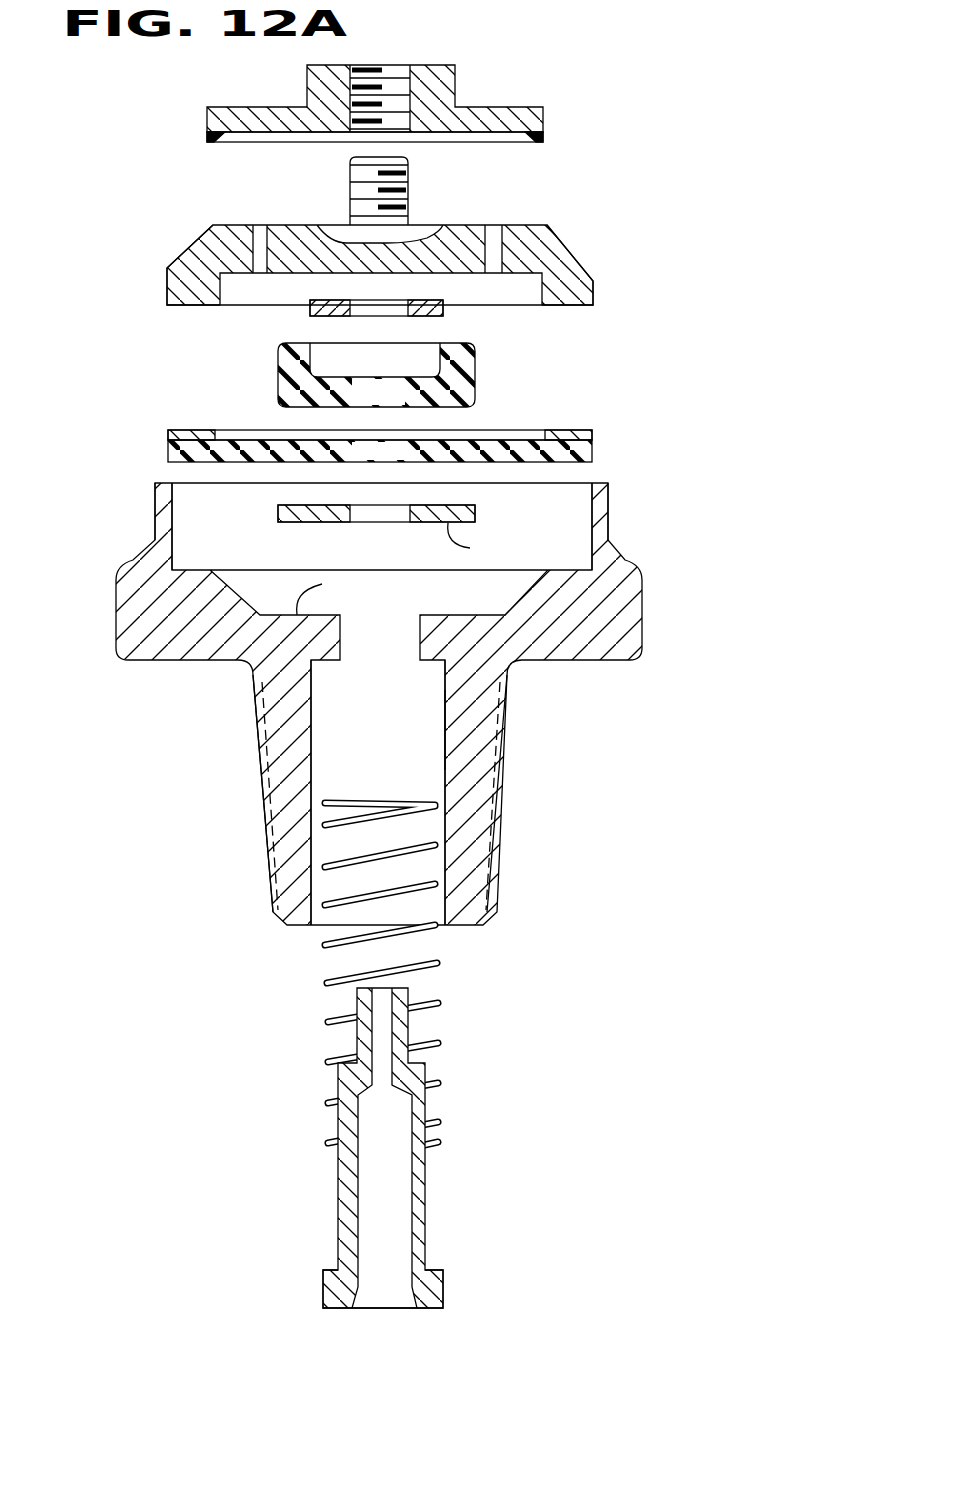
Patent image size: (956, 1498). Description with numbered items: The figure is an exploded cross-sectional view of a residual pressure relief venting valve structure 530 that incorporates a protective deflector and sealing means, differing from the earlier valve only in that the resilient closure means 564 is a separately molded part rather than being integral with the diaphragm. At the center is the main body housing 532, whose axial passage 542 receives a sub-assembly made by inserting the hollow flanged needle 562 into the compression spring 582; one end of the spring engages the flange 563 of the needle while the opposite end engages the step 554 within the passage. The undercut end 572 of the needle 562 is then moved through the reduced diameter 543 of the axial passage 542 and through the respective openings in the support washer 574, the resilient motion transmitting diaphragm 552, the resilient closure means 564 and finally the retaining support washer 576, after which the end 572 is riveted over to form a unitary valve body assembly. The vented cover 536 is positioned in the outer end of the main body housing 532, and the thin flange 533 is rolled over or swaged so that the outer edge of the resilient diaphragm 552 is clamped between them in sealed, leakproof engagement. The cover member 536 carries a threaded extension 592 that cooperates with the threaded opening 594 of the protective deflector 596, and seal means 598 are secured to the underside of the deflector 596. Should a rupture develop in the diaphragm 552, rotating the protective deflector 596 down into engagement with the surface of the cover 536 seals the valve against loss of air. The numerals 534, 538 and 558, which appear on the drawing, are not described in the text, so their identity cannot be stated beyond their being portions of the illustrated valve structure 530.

The residual pressure relief venting valve structure 530 is at (195, 848).
The main body housing 532 is at (263, 794).
The thin flange 533 is at (156, 512).
The body 534 is at (152, 642).
The vented cover 536 is at (197, 306).
The right portion of diaphragm block 538 is at (571, 293).
The axial passage 542 is at (445, 690).
The reduced diameter 543 is at (340, 637).
The resilient motion transmitting diaphragm 552 is at (264, 437).
The step 554 is at (417, 673).
The diaphragm block 558 is at (258, 232).
The hollow flanged needle 562 is at (338, 1203).
The flange 563 is at (443, 1285).
The resilient closure means 564 is at (463, 350).
The undercut end 572 is at (356, 1006).
The support washer 574 is at (338, 515).
The retaining support washer 576 is at (313, 304).
The compression spring 582 is at (443, 963).
The threaded extension 592 is at (350, 187).
The threaded opening 594 is at (390, 66).
The protective deflector 596 is at (493, 107).
The seal means 598 is at (520, 134).